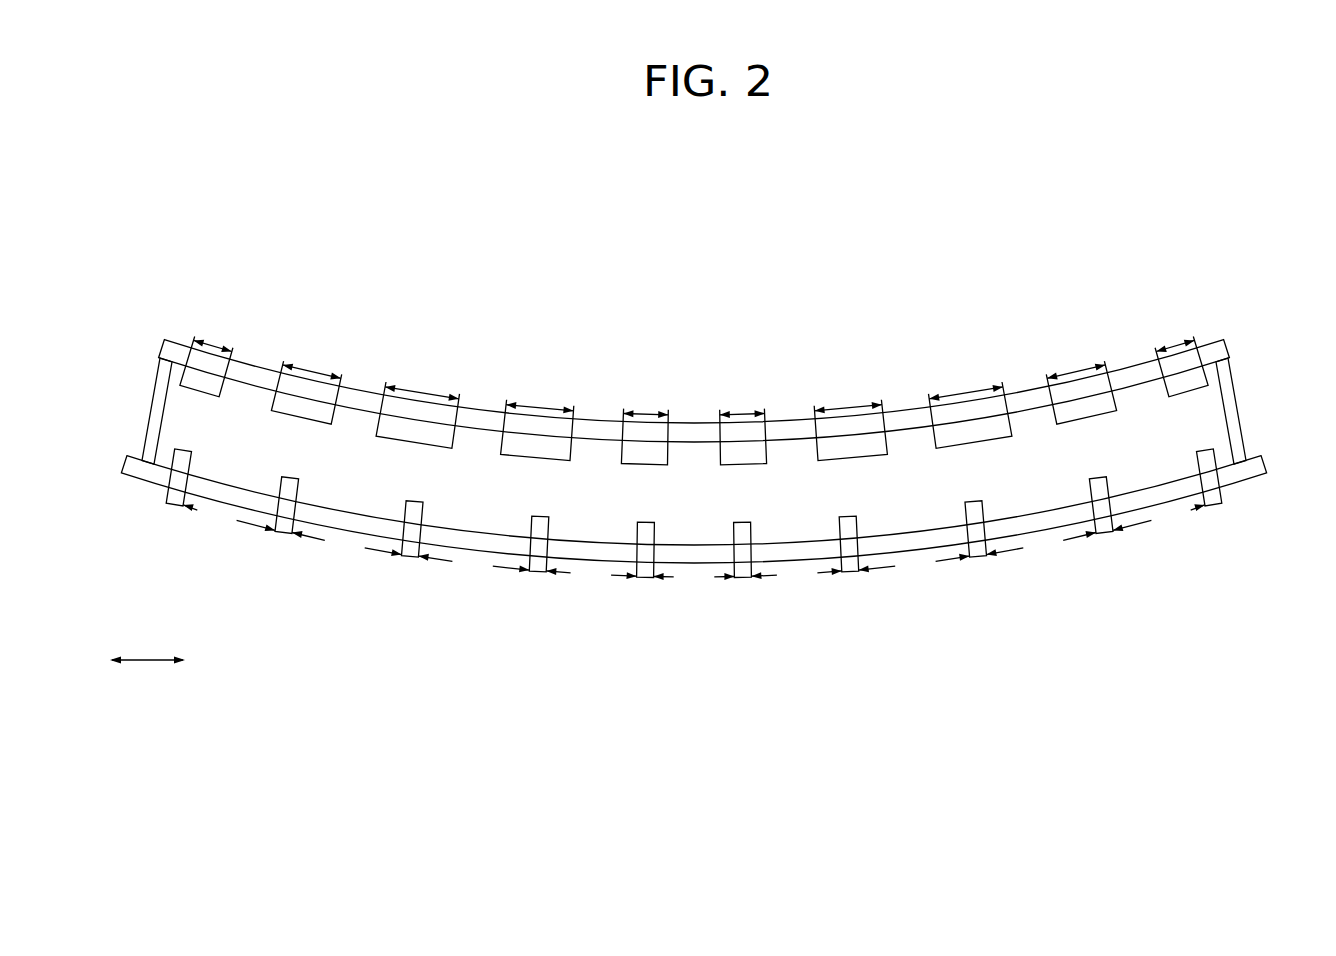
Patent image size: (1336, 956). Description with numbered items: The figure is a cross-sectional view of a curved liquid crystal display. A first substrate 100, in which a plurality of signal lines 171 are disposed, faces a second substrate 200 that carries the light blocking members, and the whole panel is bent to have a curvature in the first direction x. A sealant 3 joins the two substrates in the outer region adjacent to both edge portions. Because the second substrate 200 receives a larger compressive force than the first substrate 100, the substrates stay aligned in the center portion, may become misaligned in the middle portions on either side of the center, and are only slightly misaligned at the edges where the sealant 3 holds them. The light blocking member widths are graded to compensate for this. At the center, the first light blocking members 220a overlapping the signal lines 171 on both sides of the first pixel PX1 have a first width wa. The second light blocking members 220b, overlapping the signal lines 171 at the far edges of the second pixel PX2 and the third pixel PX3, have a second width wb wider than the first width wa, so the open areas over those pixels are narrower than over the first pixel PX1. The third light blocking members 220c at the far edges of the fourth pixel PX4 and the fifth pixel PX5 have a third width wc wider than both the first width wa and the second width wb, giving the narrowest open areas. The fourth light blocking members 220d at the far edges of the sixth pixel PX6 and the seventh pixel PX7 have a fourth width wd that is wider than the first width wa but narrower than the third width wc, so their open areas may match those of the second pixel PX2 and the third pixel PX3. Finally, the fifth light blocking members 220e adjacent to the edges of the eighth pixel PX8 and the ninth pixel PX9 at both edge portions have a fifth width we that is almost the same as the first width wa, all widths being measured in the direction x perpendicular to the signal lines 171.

The second substrate 200 is at (1226, 352).
The first substrate 100 is at (1262, 465).
The sealant 3 is at (152, 410).
The signal line 171 is at (542, 545).
The first light blocking member 220a is at (660, 450).
The second light blocking member 220b is at (565, 445).
The third light blocking member 220c is at (446, 432).
The fourth light blocking member 220d is at (330, 410).
The fifth light blocking member 220e is at (228, 382).
The first width wa is at (693, 403).
The second width wb is at (694, 397).
The third width wc is at (694, 384).
The fourth width wd is at (694, 362).
The fifth width we is at (694, 336).
The first pixel PX1 is at (694, 578).
The second pixel PX2 is at (591, 575).
The third pixel PX3 is at (796, 575).
The fourth pixel PX4 is at (474, 565).
The fifth pixel PX5 is at (914, 565).
The sixth pixel PX6 is at (347, 544).
The seventh pixel PX7 is at (1041, 544).
The eighth pixel PX8 is at (229, 517).
The ninth pixel PX9 is at (1159, 517).
The first direction x is at (157, 660).